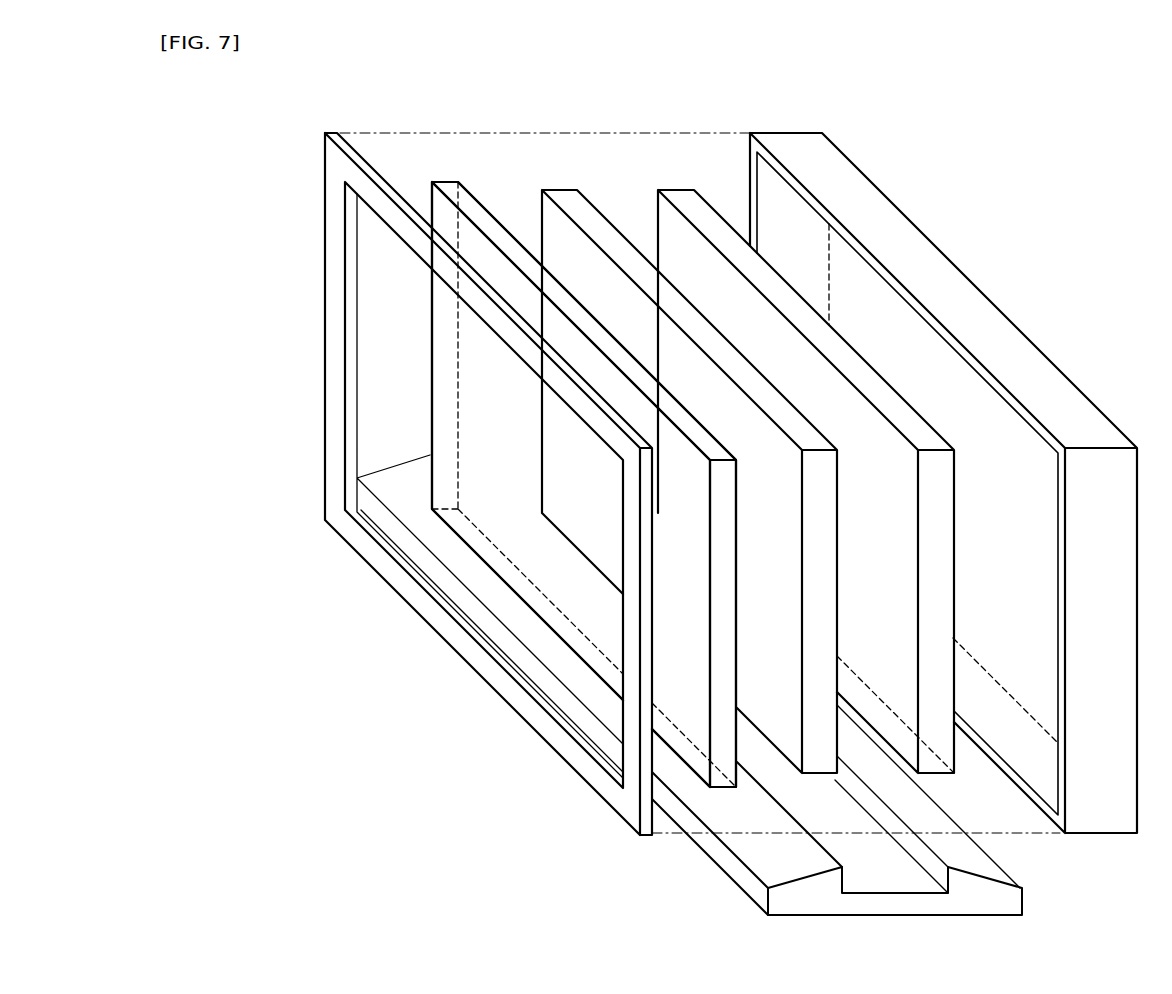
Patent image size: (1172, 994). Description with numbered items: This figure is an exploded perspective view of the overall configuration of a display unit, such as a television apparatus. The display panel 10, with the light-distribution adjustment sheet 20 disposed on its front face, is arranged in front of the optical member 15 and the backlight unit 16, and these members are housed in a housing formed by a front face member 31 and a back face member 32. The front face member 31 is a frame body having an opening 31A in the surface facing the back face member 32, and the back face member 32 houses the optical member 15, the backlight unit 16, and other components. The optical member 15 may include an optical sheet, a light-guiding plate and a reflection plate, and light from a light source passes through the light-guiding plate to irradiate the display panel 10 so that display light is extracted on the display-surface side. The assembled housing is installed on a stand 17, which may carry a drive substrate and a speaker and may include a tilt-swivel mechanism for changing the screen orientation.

The front face member 31 is at (452, 452).
The opening 31A is at (497, 405).
The display panel 10 is at (449, 183).
The light-distribution adjustment sheet 20 is at (449, 183).
The optical member 15 is at (560, 193).
The backlight unit 16 is at (676, 192).
The back face member 32 is at (792, 142).
The stand 17 is at (1025, 904).